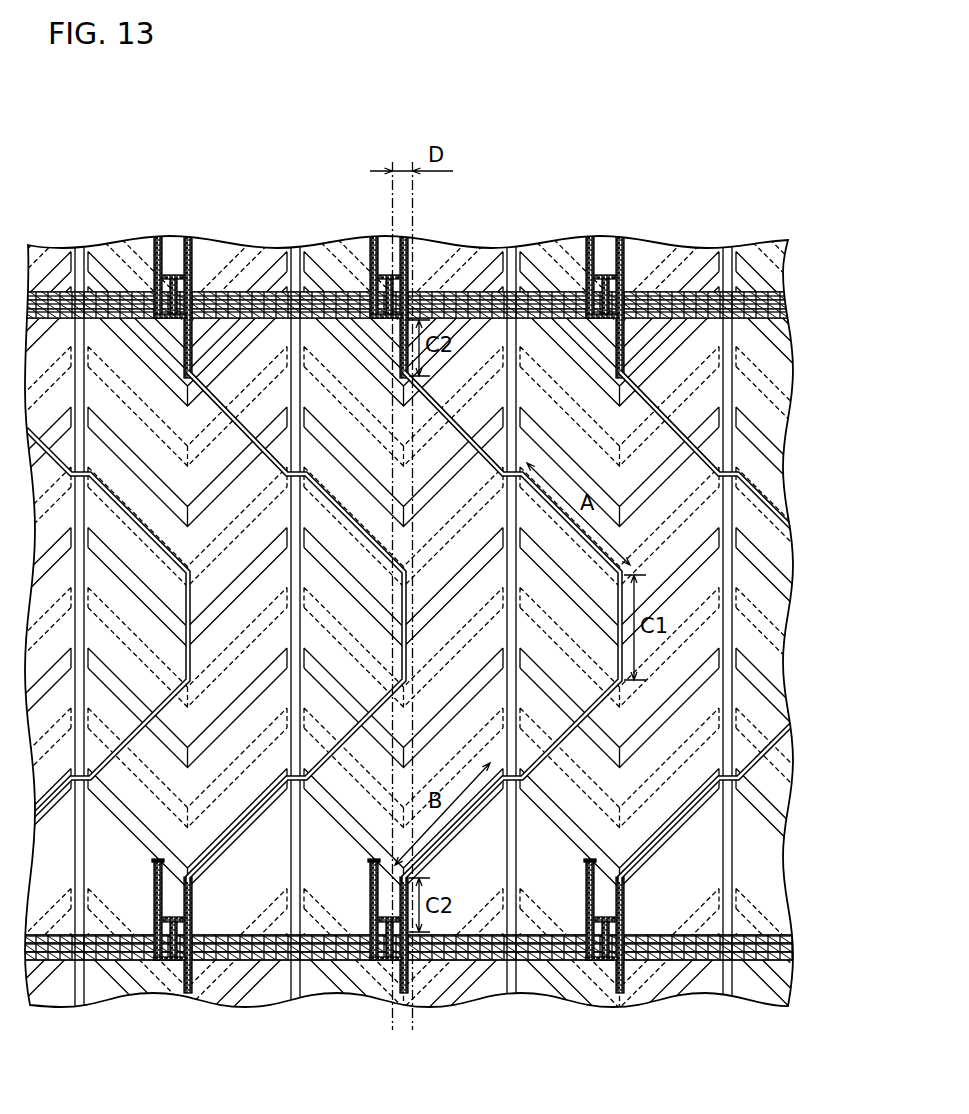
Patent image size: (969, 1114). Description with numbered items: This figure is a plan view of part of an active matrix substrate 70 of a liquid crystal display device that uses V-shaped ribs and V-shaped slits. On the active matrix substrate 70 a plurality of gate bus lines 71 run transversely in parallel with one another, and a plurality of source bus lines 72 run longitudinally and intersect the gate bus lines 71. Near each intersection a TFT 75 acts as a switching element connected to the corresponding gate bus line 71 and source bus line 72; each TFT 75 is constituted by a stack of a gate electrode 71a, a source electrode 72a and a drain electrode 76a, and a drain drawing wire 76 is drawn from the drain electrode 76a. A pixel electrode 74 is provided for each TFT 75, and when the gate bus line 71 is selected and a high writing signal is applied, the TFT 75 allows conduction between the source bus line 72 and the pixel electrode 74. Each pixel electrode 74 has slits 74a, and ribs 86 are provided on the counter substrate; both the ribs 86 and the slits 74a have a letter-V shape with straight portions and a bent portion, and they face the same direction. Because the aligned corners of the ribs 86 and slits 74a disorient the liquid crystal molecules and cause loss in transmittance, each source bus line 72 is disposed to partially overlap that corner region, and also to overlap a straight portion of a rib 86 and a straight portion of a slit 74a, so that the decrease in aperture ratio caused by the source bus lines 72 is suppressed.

The active matrix substrate 70 is at (729, 130).
The gate bus line 71 is at (780, 306).
The gate electrode 71a is at (725, 896).
The source bus line 72 is at (484, 644).
The source electrode 72a is at (642, 962).
The pixel electrode 74 is at (708, 408).
The slit 74a is at (703, 436).
The TFT 75 is at (603, 1012).
The drain drawing wire 76 is at (554, 953).
The drain electrode 76a is at (582, 985).
The rib 86 is at (660, 544).